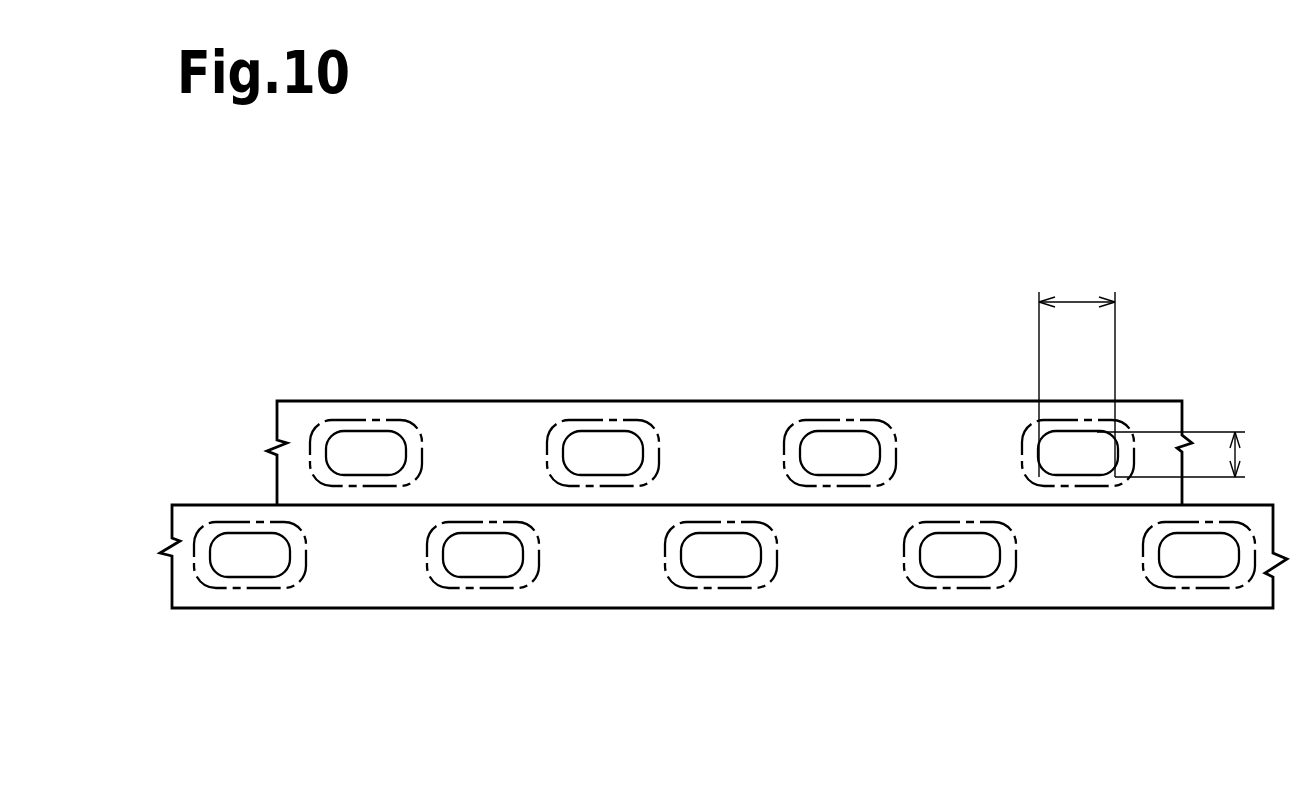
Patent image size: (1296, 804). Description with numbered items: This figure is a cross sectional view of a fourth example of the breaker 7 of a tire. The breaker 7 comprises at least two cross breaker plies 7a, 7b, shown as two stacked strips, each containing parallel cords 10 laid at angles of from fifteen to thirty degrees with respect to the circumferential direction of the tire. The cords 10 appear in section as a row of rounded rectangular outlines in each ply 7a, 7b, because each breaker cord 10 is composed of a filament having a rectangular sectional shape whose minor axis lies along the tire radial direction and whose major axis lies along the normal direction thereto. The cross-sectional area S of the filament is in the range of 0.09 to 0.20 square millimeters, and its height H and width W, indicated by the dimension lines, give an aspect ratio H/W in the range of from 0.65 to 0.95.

The breaker 7 is at (458, 717).
The breaker ply 7a is at (452, 610).
The breaker ply 7b is at (395, 505).
The breaker cord 10 is at (606, 440).
The cross-sectional area S is at (582, 442).
The filament width W is at (1072, 302).
The filament height H is at (1236, 457).